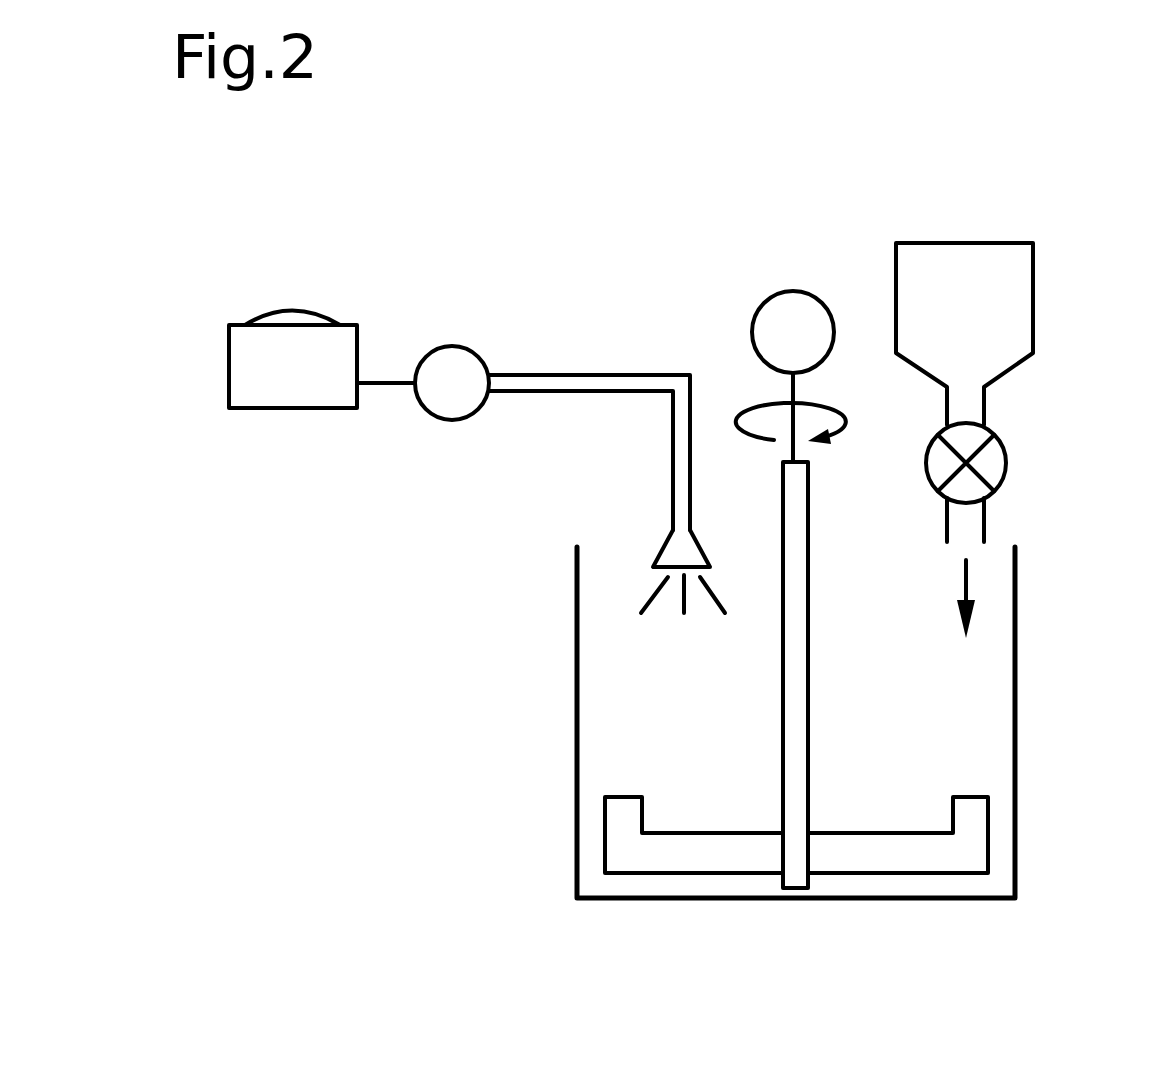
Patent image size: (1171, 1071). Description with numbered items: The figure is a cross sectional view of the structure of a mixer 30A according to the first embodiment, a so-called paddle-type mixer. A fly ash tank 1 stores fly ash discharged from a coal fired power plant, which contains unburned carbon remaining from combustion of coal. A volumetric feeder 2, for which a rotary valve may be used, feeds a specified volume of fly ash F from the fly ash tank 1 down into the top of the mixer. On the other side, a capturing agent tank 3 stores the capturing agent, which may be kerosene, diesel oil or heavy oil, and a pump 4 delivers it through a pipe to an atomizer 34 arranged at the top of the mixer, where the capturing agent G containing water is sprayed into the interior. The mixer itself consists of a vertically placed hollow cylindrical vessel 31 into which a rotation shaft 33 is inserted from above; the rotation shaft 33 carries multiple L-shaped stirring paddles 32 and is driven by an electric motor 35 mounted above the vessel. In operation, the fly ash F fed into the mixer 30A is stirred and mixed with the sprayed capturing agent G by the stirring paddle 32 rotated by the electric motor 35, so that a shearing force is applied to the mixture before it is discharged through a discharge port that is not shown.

The mixer 30A is at (598, 204).
The fly ash tank 1 is at (1033, 308).
The volumetric feeder 2 is at (1007, 458).
The capturing agent tank 3 is at (330, 313).
The pump 4 is at (467, 349).
The hollow cylindrical vessel 31 is at (576, 718).
The stirring paddle 32 is at (990, 847).
The rotation shaft 33 is at (810, 752).
The atomizer 34 is at (660, 553).
The electric motor 35 is at (793, 291).